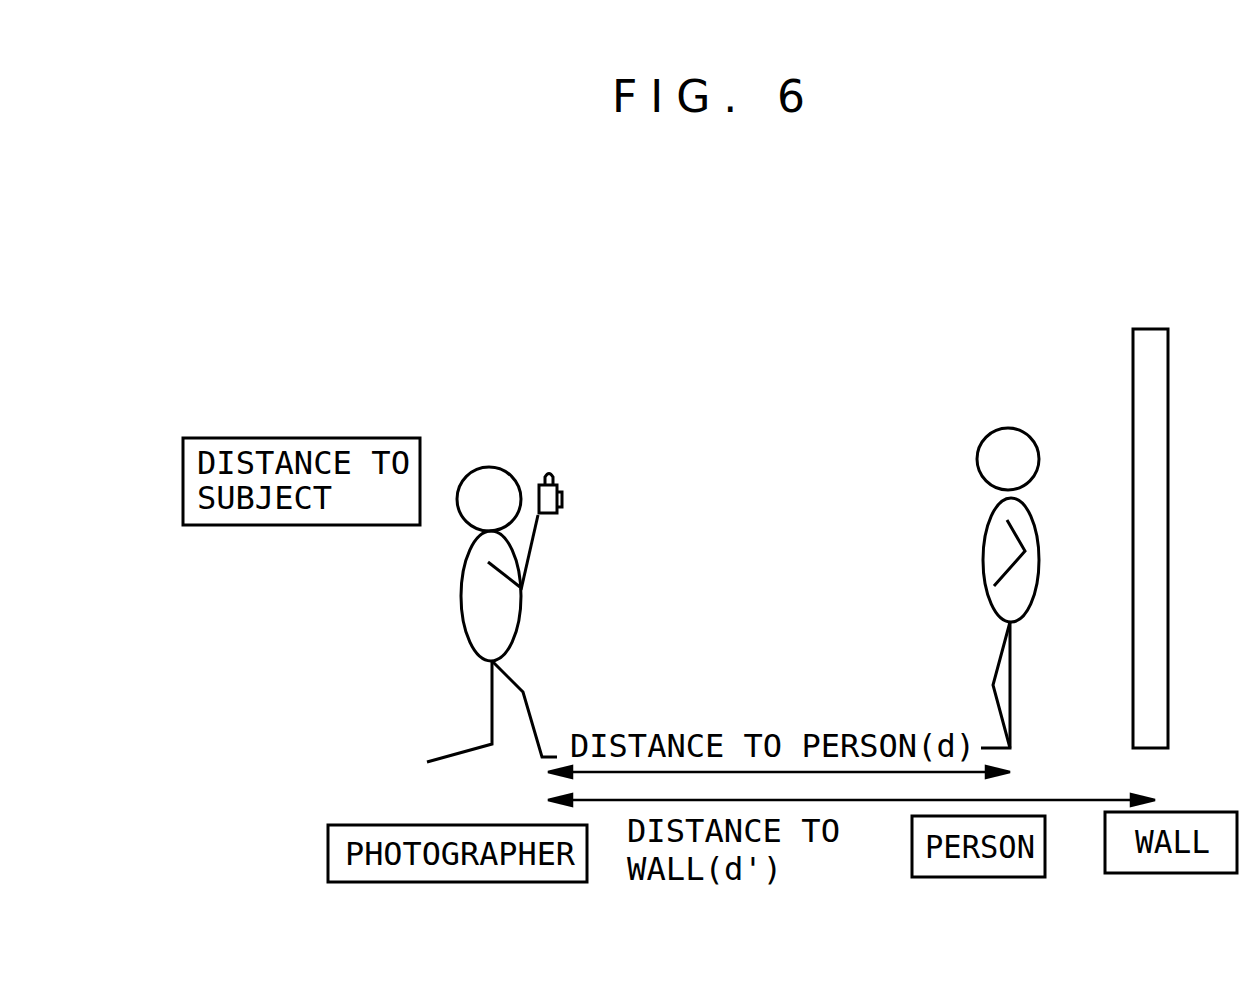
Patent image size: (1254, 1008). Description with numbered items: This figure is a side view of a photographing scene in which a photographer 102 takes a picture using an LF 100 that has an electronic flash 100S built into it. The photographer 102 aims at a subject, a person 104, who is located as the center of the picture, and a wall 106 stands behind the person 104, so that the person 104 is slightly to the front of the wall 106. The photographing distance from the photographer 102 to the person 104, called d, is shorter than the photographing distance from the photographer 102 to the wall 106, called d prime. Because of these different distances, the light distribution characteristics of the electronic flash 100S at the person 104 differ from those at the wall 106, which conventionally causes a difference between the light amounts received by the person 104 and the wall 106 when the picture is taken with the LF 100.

The LF 100 is at (539, 483).
The electronic flash 100S is at (549, 478).
The photographer 102 is at (488, 467).
The subject (person) 104 is at (1005, 428).
The wall 106 is at (1132, 337).